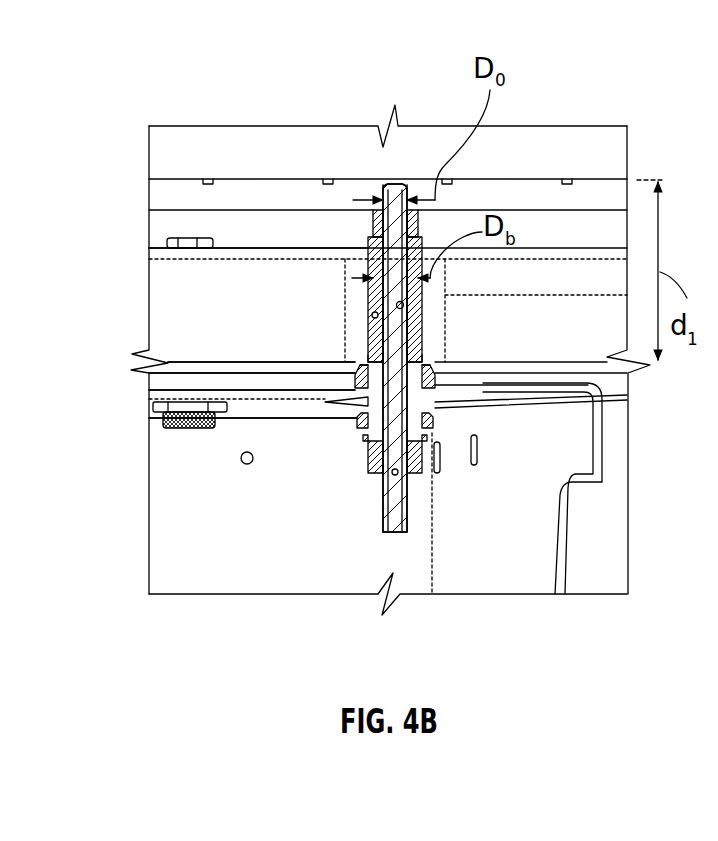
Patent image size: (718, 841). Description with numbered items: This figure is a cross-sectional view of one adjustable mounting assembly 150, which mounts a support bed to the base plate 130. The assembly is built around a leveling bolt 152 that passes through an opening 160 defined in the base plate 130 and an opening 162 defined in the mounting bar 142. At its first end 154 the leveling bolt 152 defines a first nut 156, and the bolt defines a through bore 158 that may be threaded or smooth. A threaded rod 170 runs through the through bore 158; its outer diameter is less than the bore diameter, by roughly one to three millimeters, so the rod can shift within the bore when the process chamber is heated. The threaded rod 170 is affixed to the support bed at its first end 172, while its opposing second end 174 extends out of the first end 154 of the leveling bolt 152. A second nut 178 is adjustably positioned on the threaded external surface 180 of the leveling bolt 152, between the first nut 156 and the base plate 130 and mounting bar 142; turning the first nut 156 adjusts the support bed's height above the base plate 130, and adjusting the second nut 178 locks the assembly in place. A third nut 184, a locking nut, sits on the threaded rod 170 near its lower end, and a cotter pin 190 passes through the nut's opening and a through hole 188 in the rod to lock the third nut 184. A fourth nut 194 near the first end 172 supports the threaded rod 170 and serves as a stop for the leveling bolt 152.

The base plate 130 is at (165, 382).
The mounting bar 142 is at (190, 315).
The adjustable mounting assembly 150 is at (372, 515).
The leveling bolt 152 is at (420, 362).
The first end of the leveling bolt 154 is at (442, 382).
The first nut 156 is at (357, 418).
The through bore 158 is at (420, 314).
The opening in the base plate 160 is at (366, 353).
The opening in the mounting bar 162 is at (372, 317).
The threaded rod 170 is at (395, 182).
The first end of the threaded rod 172 is at (385, 182).
The second end of the threaded rod 174 is at (407, 510).
The second nut 178 is at (355, 378).
The external surface of the leveling bolt 180 is at (312, 362).
The third nut 184 is at (364, 438).
The through hole 188 is at (398, 474).
The cotter pin 190 is at (412, 475).
The fourth nut 194 is at (373, 227).